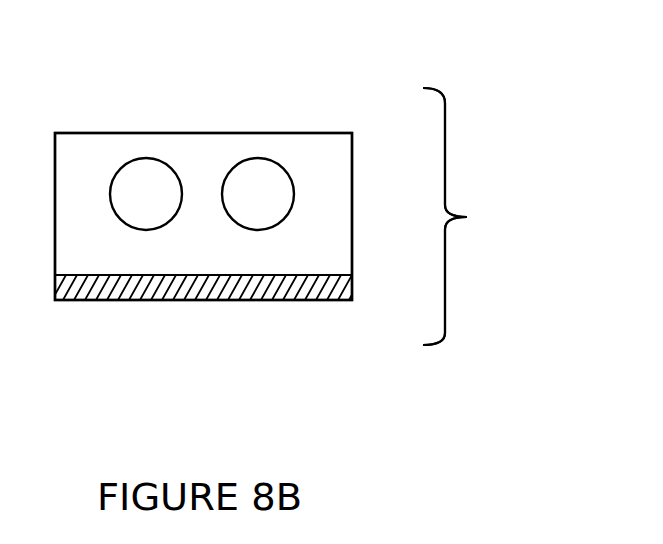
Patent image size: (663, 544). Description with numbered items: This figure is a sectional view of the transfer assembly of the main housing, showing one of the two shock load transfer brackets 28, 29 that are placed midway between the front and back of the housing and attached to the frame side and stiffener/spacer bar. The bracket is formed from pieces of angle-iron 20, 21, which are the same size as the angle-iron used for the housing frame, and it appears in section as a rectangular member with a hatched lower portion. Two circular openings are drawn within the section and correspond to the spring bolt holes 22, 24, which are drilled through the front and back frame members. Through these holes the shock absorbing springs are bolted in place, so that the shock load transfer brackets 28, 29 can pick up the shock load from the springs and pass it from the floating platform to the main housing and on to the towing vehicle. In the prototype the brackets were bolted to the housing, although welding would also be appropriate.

The angle-iron piece 20 is at (352, 168).
The angle-iron piece 21 is at (203, 172).
The spring bolt hole 22 is at (258, 194).
The spring bolt hole 24 is at (146, 194).
The shock load transfer bracket 28 is at (470, 216).
The shock load transfer bracket 29 is at (522, 216).